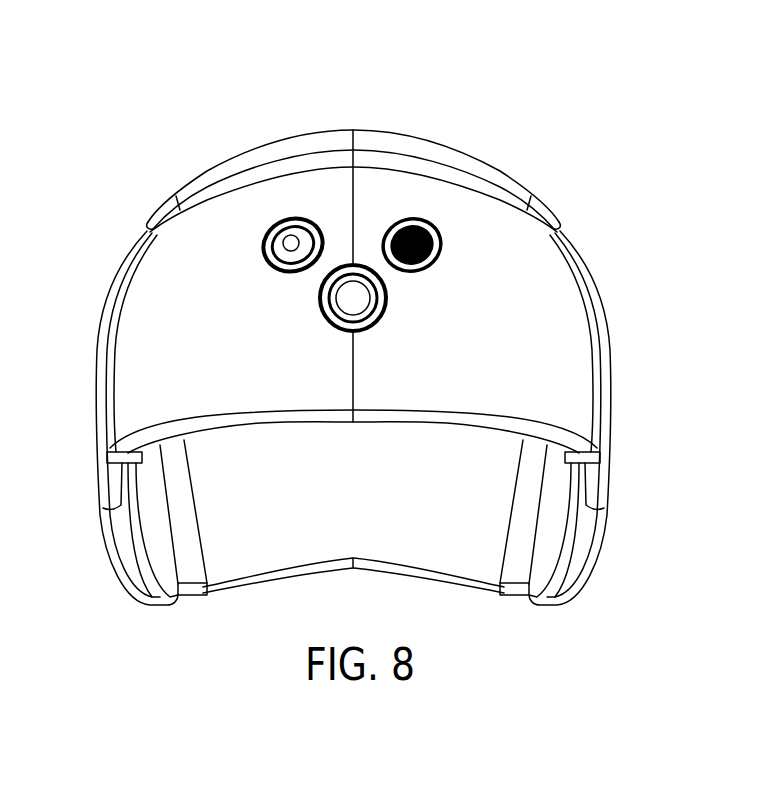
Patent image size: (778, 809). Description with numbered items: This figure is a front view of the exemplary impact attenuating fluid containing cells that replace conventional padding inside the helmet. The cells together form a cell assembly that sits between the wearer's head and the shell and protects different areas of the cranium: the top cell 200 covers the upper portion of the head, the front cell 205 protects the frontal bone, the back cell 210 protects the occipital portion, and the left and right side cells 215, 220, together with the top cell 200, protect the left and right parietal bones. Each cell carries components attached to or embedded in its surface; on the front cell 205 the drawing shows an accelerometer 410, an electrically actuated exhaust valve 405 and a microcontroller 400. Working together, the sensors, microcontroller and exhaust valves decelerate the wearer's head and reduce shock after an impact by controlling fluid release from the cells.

The top cell 200 is at (380, 128).
The front cell 205 is at (415, 388).
The back cell 210 is at (375, 481).
The left side cell 215 is at (96, 378).
The right side cell 220 is at (612, 362).
The microcontroller 400 is at (437, 244).
The exhaust valve 405 is at (325, 288).
The accelerometer 410 is at (266, 240).